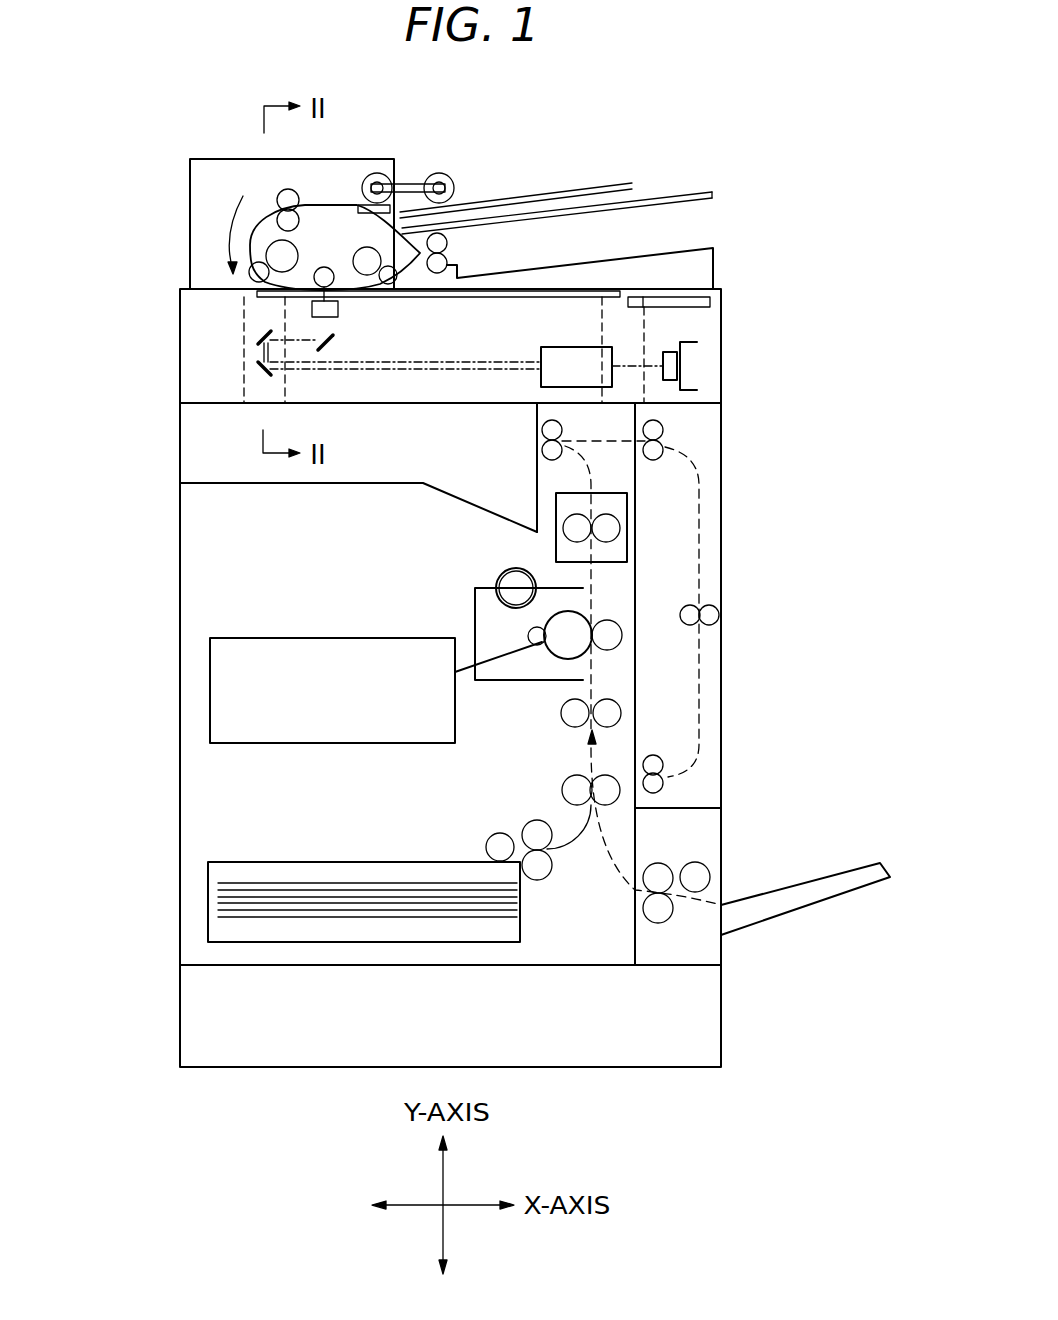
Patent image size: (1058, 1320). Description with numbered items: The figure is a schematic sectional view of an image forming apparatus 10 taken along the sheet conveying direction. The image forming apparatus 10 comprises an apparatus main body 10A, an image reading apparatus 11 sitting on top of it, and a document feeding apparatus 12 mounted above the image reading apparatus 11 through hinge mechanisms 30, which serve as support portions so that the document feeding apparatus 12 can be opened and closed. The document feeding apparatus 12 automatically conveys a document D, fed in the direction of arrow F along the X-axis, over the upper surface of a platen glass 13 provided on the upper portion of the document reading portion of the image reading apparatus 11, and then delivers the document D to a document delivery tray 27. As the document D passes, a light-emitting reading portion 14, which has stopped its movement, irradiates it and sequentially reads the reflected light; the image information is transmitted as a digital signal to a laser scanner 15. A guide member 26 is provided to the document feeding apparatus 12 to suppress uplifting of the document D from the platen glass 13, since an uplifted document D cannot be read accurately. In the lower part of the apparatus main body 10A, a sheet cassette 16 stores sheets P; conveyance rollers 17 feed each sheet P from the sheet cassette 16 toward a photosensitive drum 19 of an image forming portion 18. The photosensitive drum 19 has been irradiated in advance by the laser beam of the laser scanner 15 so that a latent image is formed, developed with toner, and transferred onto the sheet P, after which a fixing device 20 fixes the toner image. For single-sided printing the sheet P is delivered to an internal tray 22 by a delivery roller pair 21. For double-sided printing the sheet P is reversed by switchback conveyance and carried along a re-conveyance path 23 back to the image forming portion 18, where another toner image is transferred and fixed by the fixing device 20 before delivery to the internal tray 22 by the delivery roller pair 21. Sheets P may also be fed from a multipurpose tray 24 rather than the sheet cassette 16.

The image forming apparatus 10 is at (745, 186).
The apparatus main body 10A is at (742, 505).
The image reading apparatus 11 is at (153, 316).
The document feeding apparatus 12 is at (184, 230).
The platen glass 13 is at (525, 288).
The light-emitting reading portion 14 is at (338, 309).
The laser scanner 15 is at (327, 655).
The sheet cassette 16 is at (480, 943).
The conveyance rollers 17 is at (540, 870).
The image forming portion 18 is at (622, 610).
The photosensitive drum 19 is at (563, 647).
The fixing device 20 is at (556, 547).
The delivery roller pair 21 is at (563, 432).
The internal tray 22 is at (218, 483).
The re-conveyance path 23 is at (700, 662).
The multipurpose tray 24 is at (818, 877).
The guide member 26 is at (324, 267).
The document delivery tray 27 is at (650, 248).
The hinge mechanisms 30 is at (228, 340).
The document D is at (548, 190).
The arrow F is at (228, 233).
The sheet P is at (350, 880).